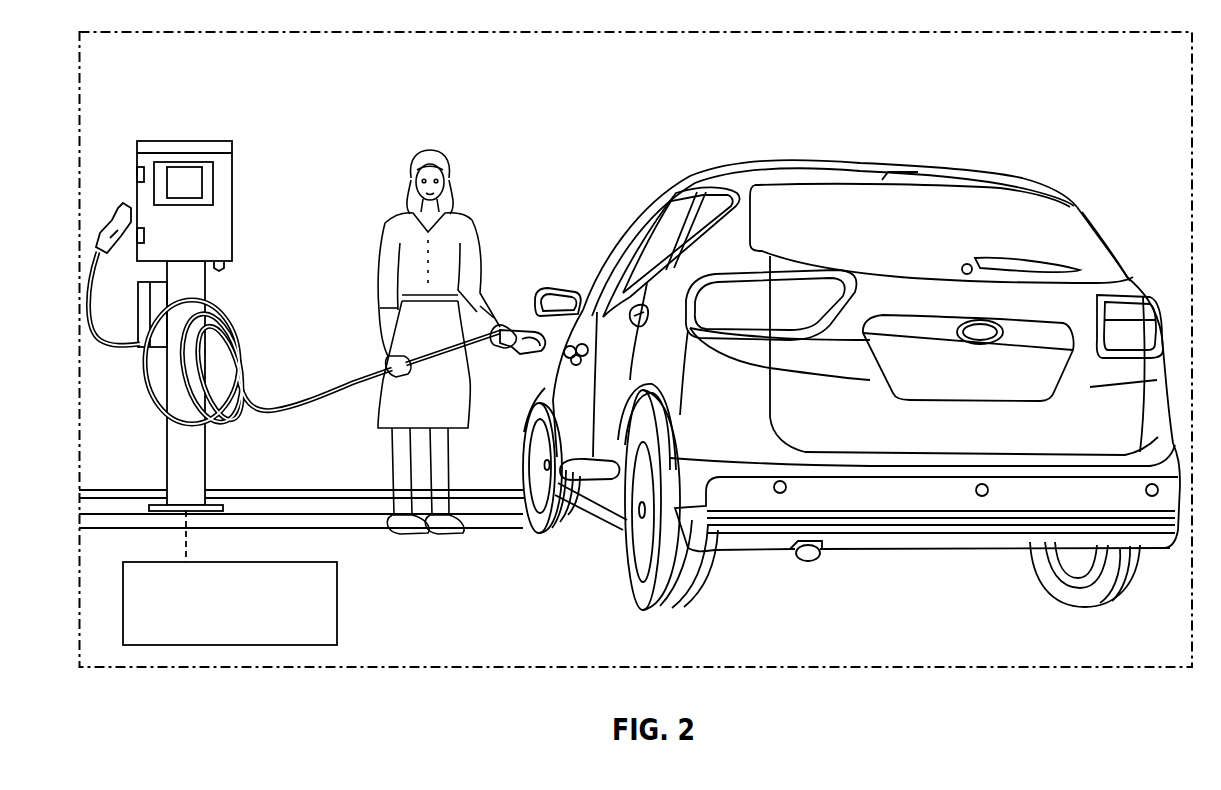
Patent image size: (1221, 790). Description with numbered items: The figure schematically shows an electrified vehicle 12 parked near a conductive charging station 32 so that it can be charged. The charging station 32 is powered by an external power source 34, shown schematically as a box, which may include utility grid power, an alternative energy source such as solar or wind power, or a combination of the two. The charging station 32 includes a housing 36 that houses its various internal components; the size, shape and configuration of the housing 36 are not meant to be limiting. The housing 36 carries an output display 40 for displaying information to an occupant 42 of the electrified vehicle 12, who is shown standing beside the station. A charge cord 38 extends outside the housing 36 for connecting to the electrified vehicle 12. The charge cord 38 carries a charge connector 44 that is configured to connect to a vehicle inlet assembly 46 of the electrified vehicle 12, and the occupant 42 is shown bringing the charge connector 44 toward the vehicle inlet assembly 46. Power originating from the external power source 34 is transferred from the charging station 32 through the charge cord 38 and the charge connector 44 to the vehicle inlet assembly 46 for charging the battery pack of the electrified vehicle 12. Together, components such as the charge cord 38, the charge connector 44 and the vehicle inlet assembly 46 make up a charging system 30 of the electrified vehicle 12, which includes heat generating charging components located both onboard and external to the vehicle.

The electrified vehicle 12 is at (838, 332).
The charging system 30 is at (534, 288).
The conductive charging station 32 is at (183, 130).
The external power source 34 is at (340, 605).
The housing 36 is at (195, 246).
The charge cord 38 is at (352, 378).
The output display 40 is at (182, 184).
The occupant 42 is at (410, 243).
The charge connector 44 is at (537, 352).
The vehicle inlet assembly 46 is at (578, 364).